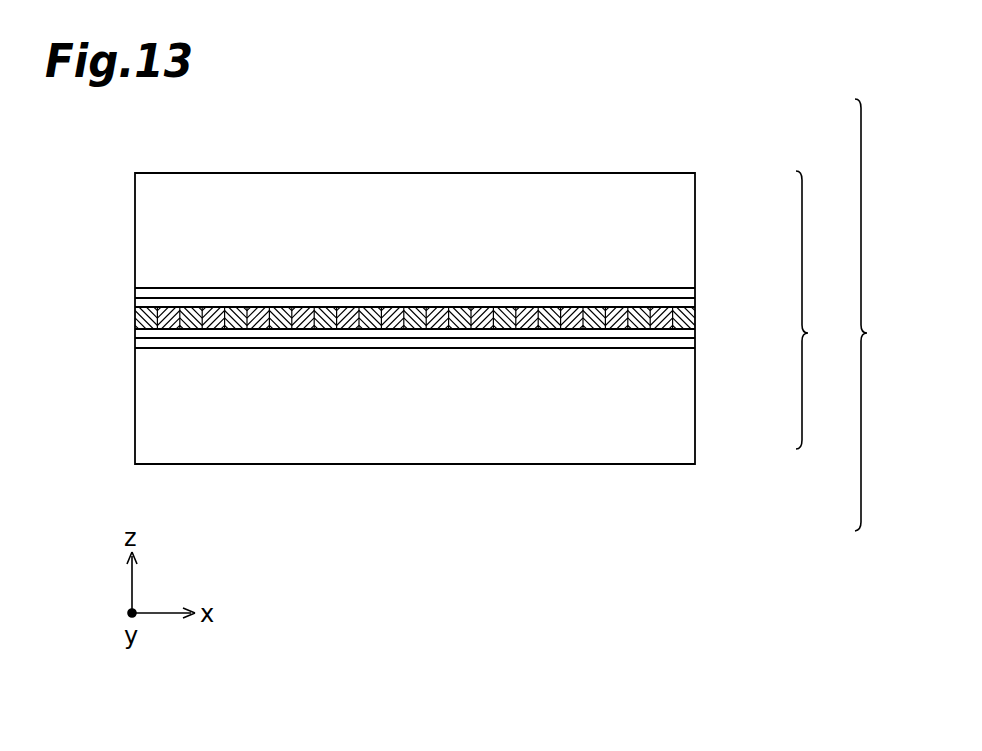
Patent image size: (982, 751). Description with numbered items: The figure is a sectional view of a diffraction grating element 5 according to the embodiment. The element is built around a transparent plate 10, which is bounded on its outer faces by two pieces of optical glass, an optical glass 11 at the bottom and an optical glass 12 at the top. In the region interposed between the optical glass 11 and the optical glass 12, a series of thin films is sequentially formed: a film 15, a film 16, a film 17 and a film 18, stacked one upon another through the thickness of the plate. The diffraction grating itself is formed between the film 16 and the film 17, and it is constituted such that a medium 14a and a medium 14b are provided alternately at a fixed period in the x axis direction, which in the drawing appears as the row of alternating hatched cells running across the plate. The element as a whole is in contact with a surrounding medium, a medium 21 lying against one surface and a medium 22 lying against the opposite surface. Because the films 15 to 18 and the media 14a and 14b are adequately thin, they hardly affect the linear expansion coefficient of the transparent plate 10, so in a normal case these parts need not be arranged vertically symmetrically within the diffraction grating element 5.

The diffraction grating element 5 is at (898, 350).
The transparent plate 10 is at (822, 310).
The optical glass 11 is at (693, 430).
The optical glass 12 is at (693, 190).
The medium 14a is at (663, 309).
The medium 14b is at (695, 316).
The film 15 is at (633, 343).
The film 16 is at (660, 332).
The film 17 is at (633, 300).
The film 18 is at (602, 290).
The medium 21 is at (690, 118).
The medium 22 is at (690, 521).